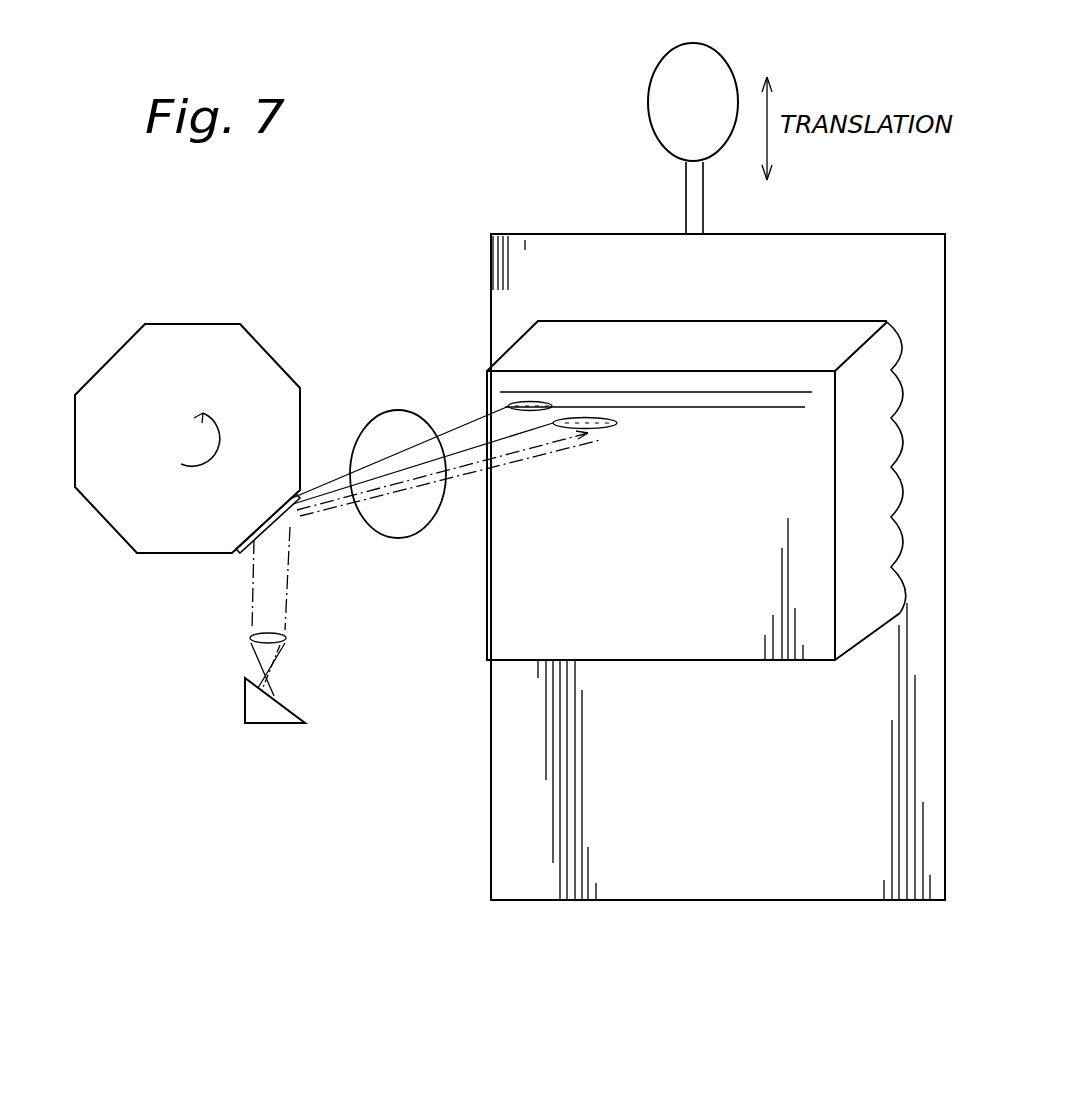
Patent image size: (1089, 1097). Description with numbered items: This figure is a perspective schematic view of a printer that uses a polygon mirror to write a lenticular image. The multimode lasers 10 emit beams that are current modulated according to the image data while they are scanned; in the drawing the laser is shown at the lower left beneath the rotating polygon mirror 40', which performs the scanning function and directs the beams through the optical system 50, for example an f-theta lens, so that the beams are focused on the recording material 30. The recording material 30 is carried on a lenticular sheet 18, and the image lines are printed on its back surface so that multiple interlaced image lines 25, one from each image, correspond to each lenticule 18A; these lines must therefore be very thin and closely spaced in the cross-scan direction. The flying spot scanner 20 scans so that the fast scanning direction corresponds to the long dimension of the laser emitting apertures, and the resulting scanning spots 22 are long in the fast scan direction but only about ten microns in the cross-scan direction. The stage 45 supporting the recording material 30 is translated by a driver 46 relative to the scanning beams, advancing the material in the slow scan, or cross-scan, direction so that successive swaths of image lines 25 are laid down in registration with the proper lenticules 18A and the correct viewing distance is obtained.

The multimode laser 10 is at (245, 703).
The lenticular sheet 18 is at (596, 348).
The lenticule 18A is at (890, 353).
The flying spot scanner 20 is at (598, 89).
The scanning spot 22 is at (575, 428).
The image line 25 is at (730, 407).
The recording material 30 is at (659, 622).
The polygon mirror 40' is at (214, 450).
The stage 45 is at (867, 775).
The driver 46 is at (667, 132).
The optical system 50 is at (402, 430).